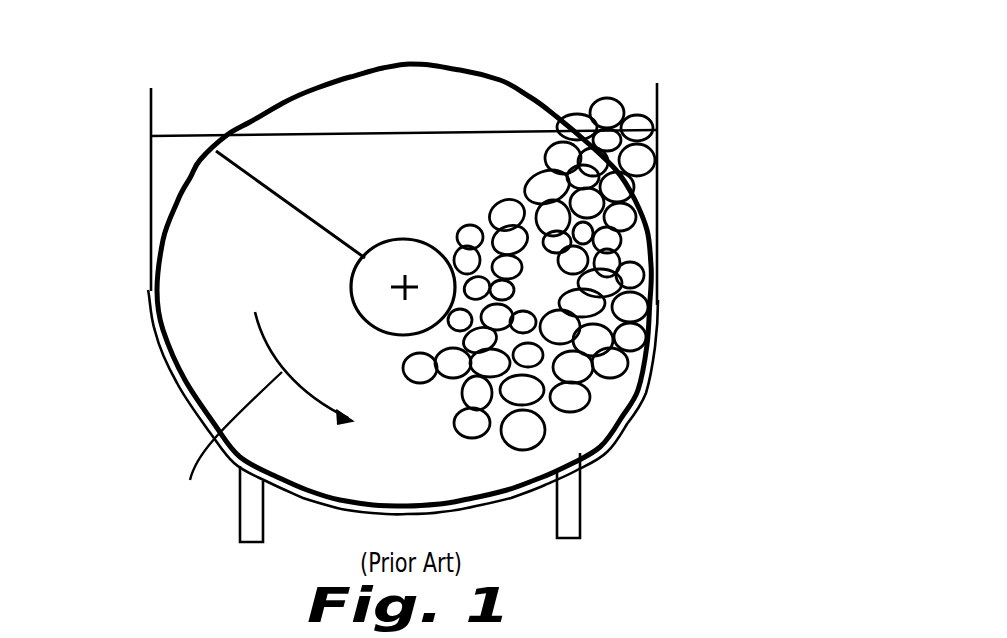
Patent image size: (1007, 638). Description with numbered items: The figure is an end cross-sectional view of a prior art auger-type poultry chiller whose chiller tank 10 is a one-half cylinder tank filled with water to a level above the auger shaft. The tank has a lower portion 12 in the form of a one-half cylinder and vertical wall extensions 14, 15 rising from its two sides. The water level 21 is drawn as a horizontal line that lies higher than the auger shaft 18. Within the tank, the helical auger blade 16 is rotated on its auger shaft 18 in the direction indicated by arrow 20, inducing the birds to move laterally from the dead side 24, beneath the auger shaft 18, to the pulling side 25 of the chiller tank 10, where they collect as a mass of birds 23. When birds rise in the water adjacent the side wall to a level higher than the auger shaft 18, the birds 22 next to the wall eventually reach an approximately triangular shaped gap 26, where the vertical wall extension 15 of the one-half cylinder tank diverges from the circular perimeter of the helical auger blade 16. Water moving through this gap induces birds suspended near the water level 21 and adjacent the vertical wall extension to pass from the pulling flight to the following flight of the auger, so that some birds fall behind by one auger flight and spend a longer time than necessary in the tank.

The chiller tank 10 is at (170, 391).
The lower portion 12 is at (187, 408).
The vertical wall extension 14 is at (150, 193).
The vertical wall extension 15 is at (658, 98).
The helical auger blade 16 is at (503, 77).
The auger shaft 18 is at (410, 255).
The arrow 20 is at (232, 443).
The water level 21 is at (497, 130).
The birds 22 is at (643, 300).
The mass of birds 23 is at (556, 294).
The dead side 24 is at (266, 261).
The pulling side 25 is at (620, 390).
The triangular shaped gap 26 is at (650, 188).